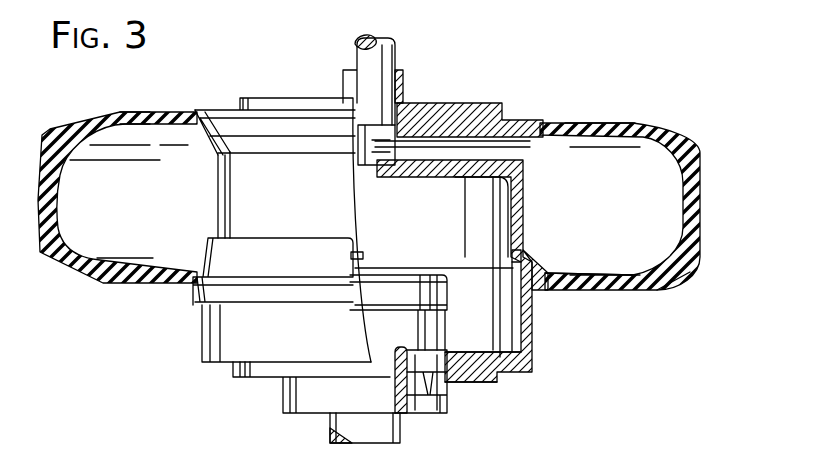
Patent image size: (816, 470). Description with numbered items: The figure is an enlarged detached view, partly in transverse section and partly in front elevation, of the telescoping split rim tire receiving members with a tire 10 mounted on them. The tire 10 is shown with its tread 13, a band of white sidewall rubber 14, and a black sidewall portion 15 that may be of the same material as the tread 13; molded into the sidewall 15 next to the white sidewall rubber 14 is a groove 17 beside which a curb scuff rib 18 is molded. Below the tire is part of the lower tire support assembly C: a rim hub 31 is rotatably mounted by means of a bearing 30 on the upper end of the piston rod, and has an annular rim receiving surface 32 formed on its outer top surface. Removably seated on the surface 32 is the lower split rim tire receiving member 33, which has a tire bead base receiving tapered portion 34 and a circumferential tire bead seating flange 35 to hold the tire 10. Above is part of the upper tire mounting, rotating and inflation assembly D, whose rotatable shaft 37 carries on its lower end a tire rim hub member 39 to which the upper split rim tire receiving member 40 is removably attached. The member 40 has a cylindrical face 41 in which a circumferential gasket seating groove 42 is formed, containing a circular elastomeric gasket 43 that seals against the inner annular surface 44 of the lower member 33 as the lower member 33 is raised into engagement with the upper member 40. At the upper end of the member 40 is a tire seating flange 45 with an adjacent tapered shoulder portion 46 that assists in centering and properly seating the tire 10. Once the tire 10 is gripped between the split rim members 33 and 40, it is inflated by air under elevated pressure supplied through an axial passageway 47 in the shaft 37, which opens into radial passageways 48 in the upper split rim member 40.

The vulcanized tire 10 is at (91, 292).
The tread 13 is at (700, 250).
The white sidewall rubber 14 is at (590, 124).
The black sidewall portion 15 is at (655, 287).
The groove 17 is at (130, 110).
The curb scuff rib 18 is at (116, 110).
The bearing 30 is at (447, 413).
The rim hub 31 is at (272, 373).
The annular rim receiving surface 32 is at (496, 355).
The lower split rim tire receiving member 33 is at (213, 340).
The tire bead base receiving tapered portion 34 is at (207, 246).
The tire bead seating flange 35 is at (540, 291).
The rotatable shaft 37 is at (355, 43).
The tire rim hub member 39 is at (455, 110).
The upper split rim tire receiving member 40 is at (470, 185).
The cylindrical face 41 is at (232, 205).
The circumferential gasket seating groove 42 is at (364, 258).
The circular elastomeric gasket 43 is at (356, 252).
The inner annular surface 44 is at (521, 322).
The tire seating flange 45 is at (197, 111).
The tapered shoulder portion 46 is at (210, 145).
The axial passageway 47 is at (372, 170).
The radial passageways 48 is at (455, 158).
The upper tire mounting, rotating and inflation assembly D is at (410, 62).
The lower tire support assembly C is at (445, 430).